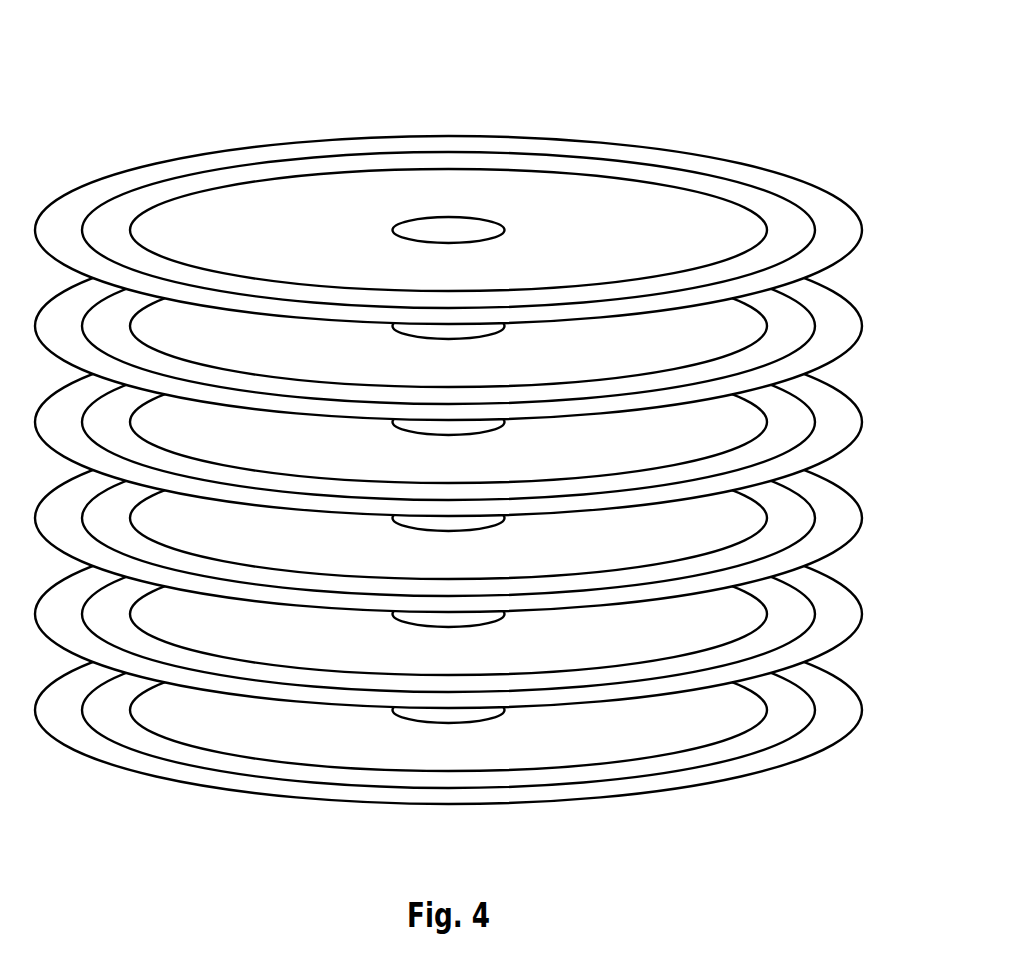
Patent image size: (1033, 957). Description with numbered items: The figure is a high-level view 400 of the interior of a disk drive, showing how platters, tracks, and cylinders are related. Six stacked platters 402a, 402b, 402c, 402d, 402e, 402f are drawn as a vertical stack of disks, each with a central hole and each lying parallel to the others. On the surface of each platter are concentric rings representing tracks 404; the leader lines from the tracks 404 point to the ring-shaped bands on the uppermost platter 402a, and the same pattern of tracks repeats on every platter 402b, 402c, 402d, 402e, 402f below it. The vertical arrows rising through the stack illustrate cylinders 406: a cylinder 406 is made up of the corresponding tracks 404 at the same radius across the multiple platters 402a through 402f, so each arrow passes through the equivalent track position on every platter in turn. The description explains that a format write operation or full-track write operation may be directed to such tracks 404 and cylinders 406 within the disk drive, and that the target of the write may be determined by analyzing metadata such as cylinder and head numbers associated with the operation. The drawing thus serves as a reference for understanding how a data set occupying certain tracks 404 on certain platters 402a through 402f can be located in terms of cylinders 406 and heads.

The disk stack assembly 400 is at (243, 63).
The platter 402a is at (448, 195).
The platter 402b is at (337, 361).
The platter 402c is at (337, 457).
The platter 402d is at (337, 553).
The platter 402e is at (337, 649).
The platter 402f is at (337, 745).
The tracks 404 is at (783, 197).
The cylinders 406 is at (100, 254).